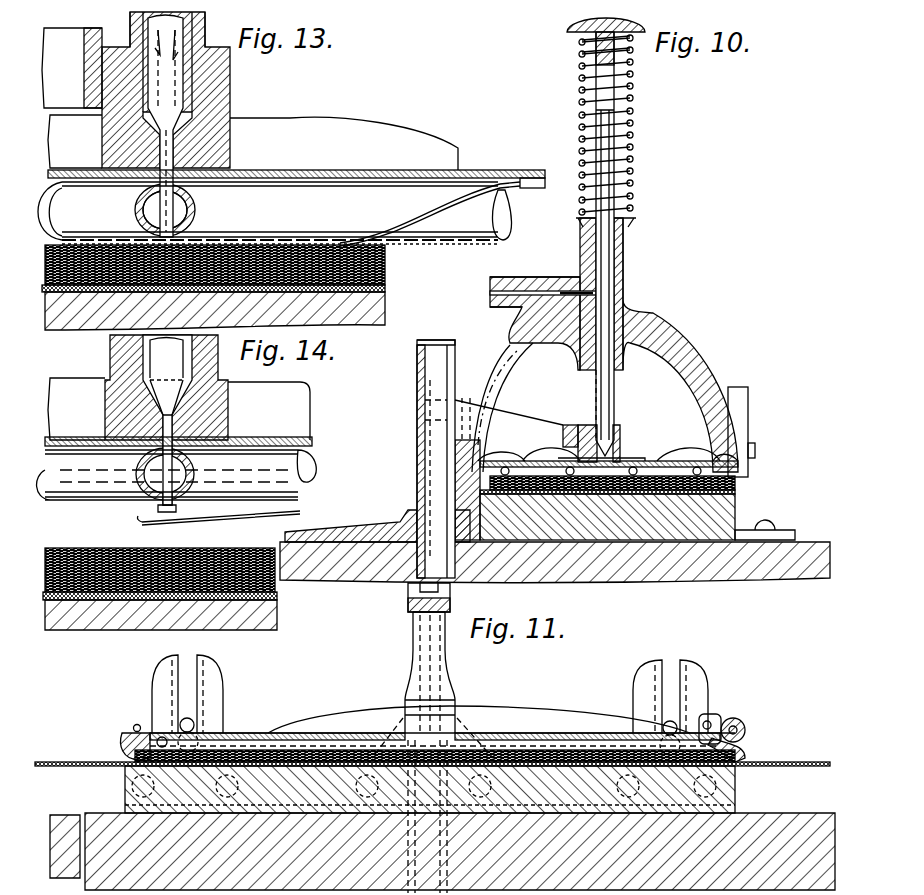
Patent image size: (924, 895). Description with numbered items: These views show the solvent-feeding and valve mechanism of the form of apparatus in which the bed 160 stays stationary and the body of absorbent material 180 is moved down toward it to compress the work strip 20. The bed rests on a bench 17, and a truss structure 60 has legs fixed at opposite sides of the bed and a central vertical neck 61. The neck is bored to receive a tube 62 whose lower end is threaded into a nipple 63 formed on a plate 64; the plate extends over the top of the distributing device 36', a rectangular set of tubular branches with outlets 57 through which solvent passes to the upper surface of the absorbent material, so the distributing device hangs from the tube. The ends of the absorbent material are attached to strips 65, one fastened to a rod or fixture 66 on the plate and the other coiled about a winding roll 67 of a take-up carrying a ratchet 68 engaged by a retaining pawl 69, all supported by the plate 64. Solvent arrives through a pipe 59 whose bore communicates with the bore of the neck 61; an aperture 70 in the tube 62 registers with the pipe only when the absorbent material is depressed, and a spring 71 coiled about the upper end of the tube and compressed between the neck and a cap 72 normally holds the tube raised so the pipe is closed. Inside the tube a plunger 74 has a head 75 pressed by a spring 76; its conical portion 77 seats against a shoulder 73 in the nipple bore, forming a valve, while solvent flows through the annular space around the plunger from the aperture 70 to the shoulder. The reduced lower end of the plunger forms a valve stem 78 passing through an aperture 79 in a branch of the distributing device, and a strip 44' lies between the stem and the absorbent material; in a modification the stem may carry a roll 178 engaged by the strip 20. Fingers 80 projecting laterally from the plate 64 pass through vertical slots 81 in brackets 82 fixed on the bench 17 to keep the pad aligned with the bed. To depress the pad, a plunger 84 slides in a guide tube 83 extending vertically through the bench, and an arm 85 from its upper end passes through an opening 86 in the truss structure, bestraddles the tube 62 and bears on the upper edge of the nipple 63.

In FIG. 10, the bench 17 is at (797, 543).
In FIG. 11, the bench 17 is at (776, 822).
In FIG. 13, the strip 20 is at (385, 293).
In FIG. 14, the strip 20 is at (277, 598).
In FIG. 10, the strip 20 is at (608, 495).
In FIG. 11, the strip 20 is at (63, 761).
In FIG. 13, the distributing device 36' is at (275, 211).
In FIG. 14, the distributing device 36' is at (194, 459).
In FIG. 10, the distributing device 36' is at (608, 447).
In FIG. 11, the distributing device 36' is at (418, 711).
In FIG. 13, the strip 44' is at (430, 214).
In FIG. 14, the strip 44' is at (219, 525).
In FIG. 13, the outlets 57 is at (470, 262).
In FIG. 10, the pipe 59 is at (492, 281).
In FIG. 10, the truss structure 60 is at (668, 338).
In FIG. 11, the truss structure 60 is at (408, 608).
In FIG. 10, the neck 61 is at (630, 244).
In FIG. 13, the tube 62 is at (130, 24).
In FIG. 10, the tube 62 is at (616, 390).
In FIG. 11, the tube 62 is at (413, 655).
In FIG. 13, the nipple 63 is at (206, 96).
In FIG. 10, the nipple 63 is at (622, 438).
In FIG. 11, the nipple 63 is at (452, 710).
In FIG. 13, the plate 64 is at (493, 176).
In FIG. 14, the plate 64 is at (278, 438).
In FIG. 10, the plate 64 is at (676, 461).
In FIG. 11, the plate 64 is at (328, 733).
In FIG. 11, the strips 65 is at (150, 730).
In FIG. 11, the rod or fixture 66 is at (135, 724).
In FIG. 11, the winding roll 67 is at (745, 725).
In FIG. 11, the ratchet 68 is at (736, 718).
In FIG. 11, the retaining pawl 69 is at (712, 720).
In FIG. 10, the aperture 70 is at (596, 299).
In FIG. 10, the spring 71 is at (633, 146).
In FIG. 10, the cap 72 is at (570, 29).
In FIG. 13, the shoulder 73 is at (226, 134).
In FIG. 14, the shoulder 73 is at (185, 385).
In FIG. 13, the plunger 74 is at (180, 74).
In FIG. 14, the plunger 74 is at (155, 353).
In FIG. 10, the plunger 74 is at (597, 403).
In FIG. 10, the head 75 is at (618, 86).
In FIG. 10, the spring 76 is at (596, 50).
In FIG. 13, the conical portion 77 is at (150, 128).
In FIG. 14, the conical portion 77 is at (165, 400).
In FIG. 13, the valve stem 78 is at (188, 211).
In FIG. 13, the aperture 79 is at (150, 210).
In FIG. 14, the aperture 79 is at (140, 466).
In FIG. 10, the fingers 80 is at (756, 455).
In FIG. 11, the fingers 80 is at (196, 724).
In FIG. 11, the vertical slots 81 is at (183, 679).
In FIG. 10, the brackets 82 is at (750, 397).
In FIG. 11, the brackets 82 is at (222, 682).
In FIG. 10, the guide tube 83 is at (417, 370).
In FIG. 10, the plunger 84 is at (425, 452).
In FIG. 13, the arm 85 is at (72, 68).
In FIG. 10, the arm 85 is at (536, 422).
In FIG. 10, the opening 86 is at (498, 366).
In FIG. 13, the bed 160 is at (385, 320).
In FIG. 14, the bed 160 is at (74, 630).
In FIG. 10, the bed 160 is at (720, 506).
In FIG. 11, the bed 160 is at (125, 786).
In FIG. 14, the roll 178 is at (157, 512).
In FIG. 13, the body of absorbent material 180 is at (385, 268).
In FIG. 14, the body of absorbent material 180 is at (64, 548).
In FIG. 10, the body of absorbent material 180 is at (745, 484).
In FIG. 11, the body of absorbent material 180 is at (258, 750).